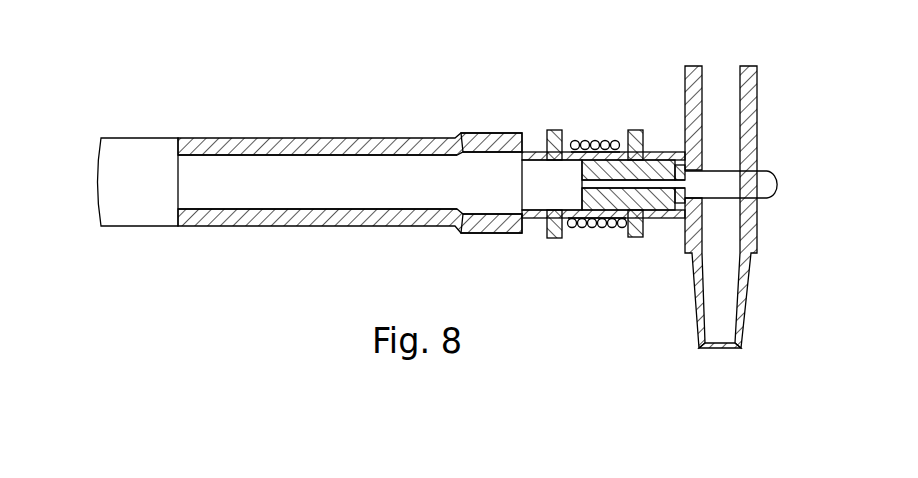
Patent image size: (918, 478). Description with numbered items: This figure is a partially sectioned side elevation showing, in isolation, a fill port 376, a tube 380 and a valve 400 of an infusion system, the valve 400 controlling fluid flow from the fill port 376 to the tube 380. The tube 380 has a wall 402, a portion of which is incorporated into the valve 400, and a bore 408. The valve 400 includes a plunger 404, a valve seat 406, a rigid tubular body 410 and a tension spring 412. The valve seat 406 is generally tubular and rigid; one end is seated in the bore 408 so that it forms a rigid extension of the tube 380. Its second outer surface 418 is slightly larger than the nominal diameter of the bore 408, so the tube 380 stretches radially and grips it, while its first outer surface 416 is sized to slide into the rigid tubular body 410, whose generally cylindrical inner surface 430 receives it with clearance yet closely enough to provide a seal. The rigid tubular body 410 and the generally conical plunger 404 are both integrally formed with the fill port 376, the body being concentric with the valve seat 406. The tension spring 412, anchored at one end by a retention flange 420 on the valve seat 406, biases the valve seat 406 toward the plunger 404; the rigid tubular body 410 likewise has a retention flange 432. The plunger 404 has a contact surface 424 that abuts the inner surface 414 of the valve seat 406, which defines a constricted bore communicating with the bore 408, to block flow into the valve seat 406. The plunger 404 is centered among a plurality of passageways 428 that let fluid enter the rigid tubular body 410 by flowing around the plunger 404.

The valve 400 is at (183, 78).
The tube 380 is at (180, 240).
The wall 402 is at (352, 138).
The bore 408 is at (343, 178).
The second outer surface 418 is at (537, 233).
The retention flange 420 is at (555, 130).
The first outer surface 416 is at (645, 150).
The tension spring 412 is at (580, 227).
The valve seat 406 is at (580, 137).
The retention flange 432 is at (634, 132).
The inner surface 430 is at (613, 227).
The plunger 404 is at (680, 222).
The rigid tubular body 410 is at (652, 233).
The inner surface 414 is at (672, 152).
The fill port 376 is at (763, 277).
The contact surface 424 is at (702, 117).
The passageways 428 is at (774, 172).